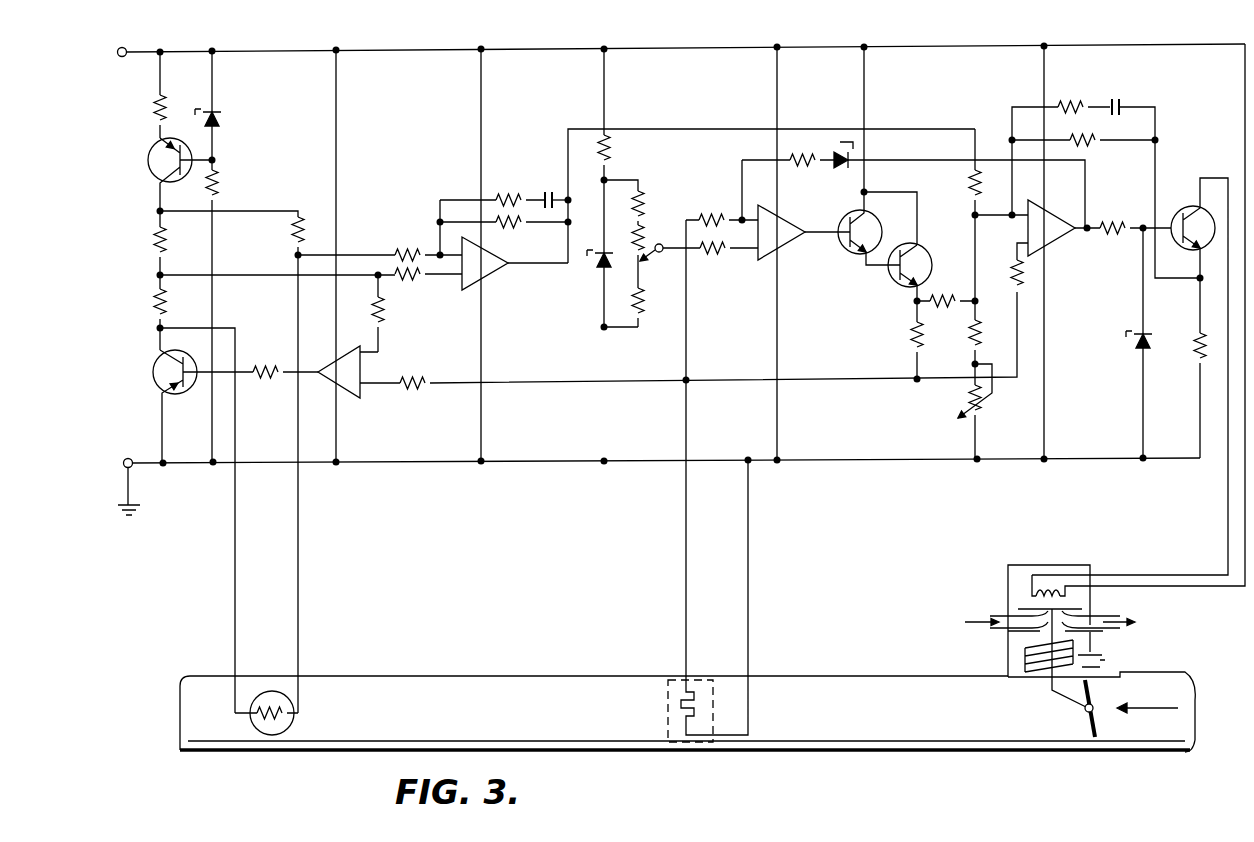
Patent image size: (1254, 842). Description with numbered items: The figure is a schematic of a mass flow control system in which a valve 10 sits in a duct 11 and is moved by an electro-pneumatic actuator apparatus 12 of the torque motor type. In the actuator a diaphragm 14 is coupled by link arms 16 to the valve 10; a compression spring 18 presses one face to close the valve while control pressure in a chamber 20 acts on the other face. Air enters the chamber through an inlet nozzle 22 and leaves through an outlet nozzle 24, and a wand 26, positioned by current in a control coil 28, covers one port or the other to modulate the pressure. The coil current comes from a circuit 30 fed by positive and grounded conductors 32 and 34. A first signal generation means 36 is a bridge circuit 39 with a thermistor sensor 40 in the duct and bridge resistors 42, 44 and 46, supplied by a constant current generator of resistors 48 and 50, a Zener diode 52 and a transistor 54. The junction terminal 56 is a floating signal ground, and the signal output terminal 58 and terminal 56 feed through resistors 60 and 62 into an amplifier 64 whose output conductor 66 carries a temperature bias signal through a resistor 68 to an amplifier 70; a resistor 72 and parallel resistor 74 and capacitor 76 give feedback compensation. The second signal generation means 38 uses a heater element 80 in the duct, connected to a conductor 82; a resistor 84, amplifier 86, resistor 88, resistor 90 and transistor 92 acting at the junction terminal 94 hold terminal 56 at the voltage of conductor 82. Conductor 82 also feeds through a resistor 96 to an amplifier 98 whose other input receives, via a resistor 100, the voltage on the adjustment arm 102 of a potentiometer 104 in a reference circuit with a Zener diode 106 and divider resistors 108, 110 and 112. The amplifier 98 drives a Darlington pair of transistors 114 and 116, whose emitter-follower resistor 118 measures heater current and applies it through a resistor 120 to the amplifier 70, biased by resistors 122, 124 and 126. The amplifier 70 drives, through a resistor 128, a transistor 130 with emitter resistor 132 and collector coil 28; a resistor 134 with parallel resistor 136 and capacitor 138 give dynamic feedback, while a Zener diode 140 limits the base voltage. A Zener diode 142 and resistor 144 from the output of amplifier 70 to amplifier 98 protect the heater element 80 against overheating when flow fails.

The valve 10 is at (1085, 720).
The duct 11 is at (532, 728).
The actuator apparatus 12 is at (921, 553).
The diaphragm 14 is at (1096, 652).
The link arms 16 is at (1048, 698).
The compression spring 18 is at (1110, 668).
The chamber 20 is at (1010, 568).
The inlet nozzle 22 is at (1005, 618).
The outlet nozzle 24 is at (1100, 620).
The wand 26 is at (1023, 658).
The control coil 28 is at (1058, 592).
The circuit 30 is at (571, 492).
The positive power supply conductor 32 is at (187, 52).
The grounded power supply conductor 34 is at (352, 464).
The signal generation means 36 is at (351, 546).
The signal generation means 38 is at (640, 593).
The bridge circuit 39 is at (272, 142).
The sensor 40 is at (273, 736).
The bridge reference resistor 42 is at (300, 214).
The bridge resistor 44 is at (158, 246).
The bridge resistor 46 is at (158, 320).
The resistor 48 is at (134, 95).
The resistor 50 is at (216, 178).
The Zener diode 52 is at (222, 114).
The transistor 54 is at (147, 160).
The common junction terminal 56 is at (158, 278).
The signal output terminal 58 is at (296, 256).
The resistor 60 is at (410, 250).
The resistor 62 is at (415, 277).
The amplifier 64 is at (494, 276).
The conductor 66 is at (645, 128).
The resistor 68 is at (972, 189).
The amplifier 70 is at (1056, 243).
The resistor 72 is at (508, 226).
The resistor 74 is at (512, 193).
The capacitor 76 is at (548, 190).
The electrically energized element 80 is at (688, 743).
The conductor 82 is at (722, 378).
The resistor 84 is at (432, 382).
The amplifier 86 is at (342, 386).
The resistor 88 is at (382, 324).
The resistor 90 is at (268, 366).
The transistor 92 is at (158, 383).
The common junction terminal 94 is at (160, 331).
The resistor 96 is at (713, 215).
The amplifier 98 is at (765, 263).
The resistor 100 is at (716, 253).
The adjustment arm 102 is at (642, 291).
The potentiometer 104 is at (645, 240).
The Zener diode 106 is at (596, 267).
The voltage divider resistor 108 is at (612, 153).
The voltage divider resistor 110 is at (642, 197).
The voltage divider resistor 112 is at (640, 323).
The transistor 114 is at (846, 253).
The transistor 116 is at (893, 281).
The emitter-follower resistor 118 is at (912, 339).
The resistor 120 is at (948, 297).
The resistor 122 is at (1016, 276).
The resistor 124 is at (972, 345).
The resistor 126 is at (985, 410).
The resistor 128 is at (1120, 223).
The transistor 130 is at (1183, 205).
The resistor 132 is at (1196, 363).
The resistor 134 is at (1092, 145).
The resistor 136 is at (1075, 103).
The capacitor 138 is at (1121, 100).
The Zener diode 140 is at (1135, 350).
The Zener diode 142 is at (841, 170).
The resistor 144 is at (800, 166).